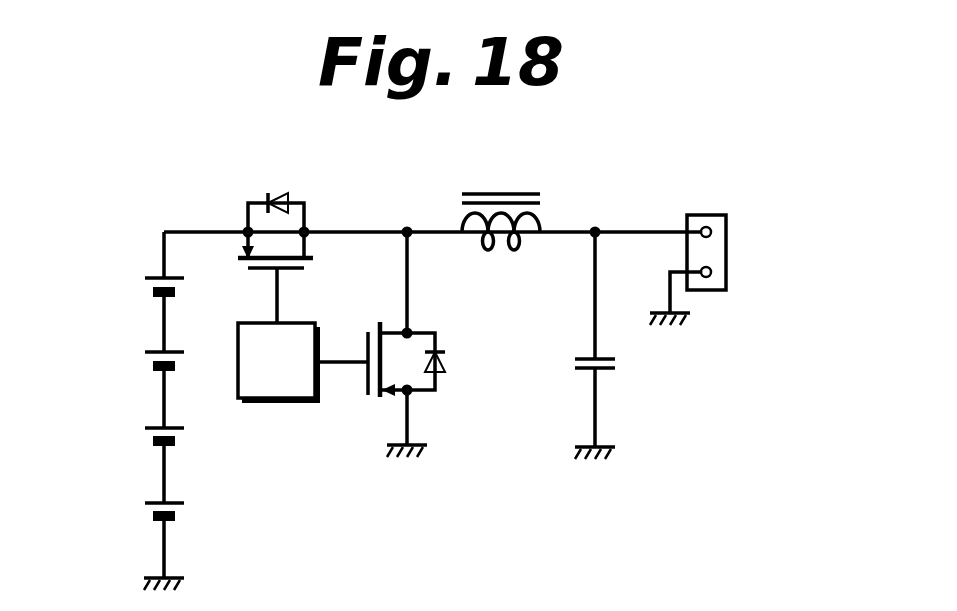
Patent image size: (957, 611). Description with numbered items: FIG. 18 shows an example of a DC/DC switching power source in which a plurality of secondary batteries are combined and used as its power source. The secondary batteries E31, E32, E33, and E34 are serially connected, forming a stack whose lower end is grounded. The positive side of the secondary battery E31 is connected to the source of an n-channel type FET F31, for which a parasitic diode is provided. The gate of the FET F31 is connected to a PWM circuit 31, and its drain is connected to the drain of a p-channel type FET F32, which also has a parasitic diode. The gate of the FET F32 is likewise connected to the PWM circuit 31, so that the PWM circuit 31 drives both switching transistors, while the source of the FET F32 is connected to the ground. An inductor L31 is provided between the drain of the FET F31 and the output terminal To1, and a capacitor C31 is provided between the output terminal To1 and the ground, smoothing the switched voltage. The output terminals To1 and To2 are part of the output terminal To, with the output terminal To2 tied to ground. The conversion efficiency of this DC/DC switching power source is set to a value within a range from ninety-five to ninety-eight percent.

The secondary battery E31 is at (144, 288).
The secondary battery E32 is at (144, 362).
The secondary battery E33 is at (144, 437).
The secondary battery E34 is at (144, 512).
The n-channel type FET F31 is at (313, 263).
The p-channel type FET F32 is at (373, 400).
The PWM circuit 31 is at (280, 403).
The inductor L31 is at (538, 213).
The capacitor C31 is at (618, 364).
The output terminal To is at (706, 215).
The output terminal To1 is at (712, 232).
The output terminal To2 is at (712, 272).